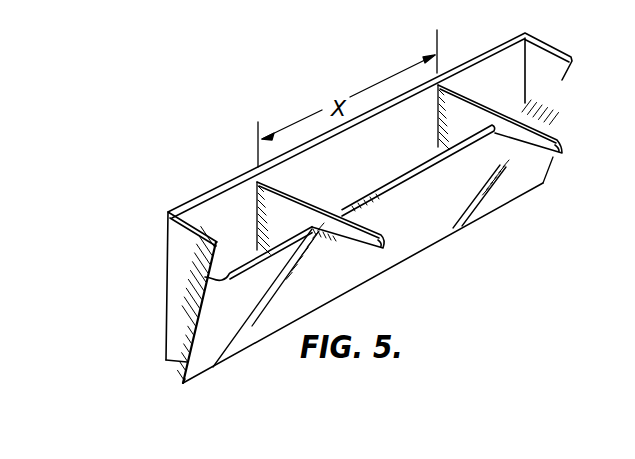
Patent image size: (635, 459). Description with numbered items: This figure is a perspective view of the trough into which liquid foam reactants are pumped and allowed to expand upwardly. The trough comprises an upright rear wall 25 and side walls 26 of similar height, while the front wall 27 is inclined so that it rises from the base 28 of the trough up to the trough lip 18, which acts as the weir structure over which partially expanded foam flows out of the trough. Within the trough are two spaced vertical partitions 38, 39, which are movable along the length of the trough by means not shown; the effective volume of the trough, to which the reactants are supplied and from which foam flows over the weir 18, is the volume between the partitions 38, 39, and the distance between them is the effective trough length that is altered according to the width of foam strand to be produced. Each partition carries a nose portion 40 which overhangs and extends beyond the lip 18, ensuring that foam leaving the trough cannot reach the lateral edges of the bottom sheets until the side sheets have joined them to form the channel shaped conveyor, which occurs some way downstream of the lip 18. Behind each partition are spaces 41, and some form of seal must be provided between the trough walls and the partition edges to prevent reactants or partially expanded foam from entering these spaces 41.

The trough lip 18 is at (392, 181).
The rear wall 25 is at (197, 203).
The side walls 26 is at (177, 297).
The front wall 27 is at (360, 273).
The base 28 is at (175, 363).
The vertical partition 38 is at (284, 200).
The vertical partition 39 is at (465, 108).
The nose portion 40 is at (312, 226).
The spaces 41 is at (236, 205).